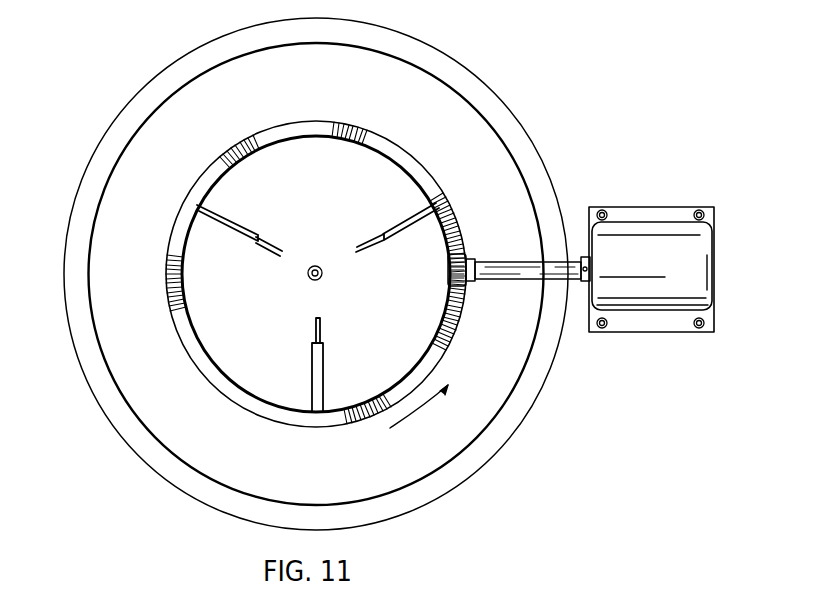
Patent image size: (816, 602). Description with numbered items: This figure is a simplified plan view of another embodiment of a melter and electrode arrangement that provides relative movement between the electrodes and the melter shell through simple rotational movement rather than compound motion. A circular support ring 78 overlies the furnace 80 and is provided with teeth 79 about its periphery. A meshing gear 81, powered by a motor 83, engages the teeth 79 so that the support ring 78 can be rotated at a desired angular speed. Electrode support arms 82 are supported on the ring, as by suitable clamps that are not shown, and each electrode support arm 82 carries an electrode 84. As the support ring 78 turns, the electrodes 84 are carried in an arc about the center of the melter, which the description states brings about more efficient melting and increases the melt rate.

The circular support ring 78 is at (185, 258).
The teeth 79 is at (450, 240).
The furnace 80 is at (510, 93).
The meshing gear 81 is at (465, 258).
The electrode support arms 82 is at (320, 385).
The motor 83 is at (657, 236).
The electrode 84 is at (320, 330).